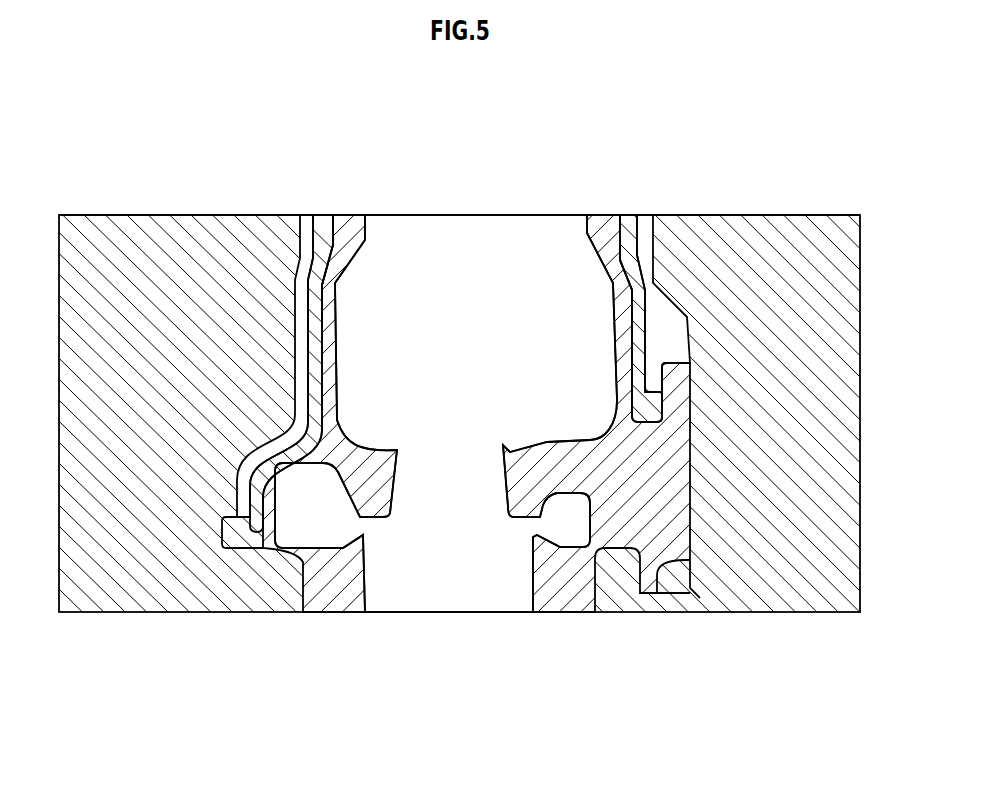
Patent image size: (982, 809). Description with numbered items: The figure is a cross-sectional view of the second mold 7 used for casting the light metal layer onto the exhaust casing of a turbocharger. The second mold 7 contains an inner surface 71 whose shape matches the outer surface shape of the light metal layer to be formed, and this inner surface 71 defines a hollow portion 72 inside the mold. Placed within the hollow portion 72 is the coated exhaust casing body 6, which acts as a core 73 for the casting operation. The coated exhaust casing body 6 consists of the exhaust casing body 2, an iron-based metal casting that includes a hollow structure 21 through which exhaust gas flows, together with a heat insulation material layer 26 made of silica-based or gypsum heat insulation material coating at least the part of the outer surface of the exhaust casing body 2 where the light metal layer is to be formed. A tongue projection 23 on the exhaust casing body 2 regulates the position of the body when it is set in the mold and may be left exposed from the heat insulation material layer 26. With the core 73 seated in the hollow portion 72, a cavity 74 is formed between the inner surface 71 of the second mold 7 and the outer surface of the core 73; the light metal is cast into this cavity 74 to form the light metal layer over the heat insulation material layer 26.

The second mold 7 is at (792, 178).
The tongue projection 23 is at (410, 215).
The hollow portion 72 is at (455, 626).
The coated exhaust casing body 6 is at (491, 335).
The core 73 is at (491, 413).
The hollow structure 21 is at (496, 322).
The inner surface 71 is at (310, 215).
The exhaust casing body 2 is at (352, 215).
The heat insulation material layer 26 is at (325, 215).
The cavity 74 is at (243, 512).